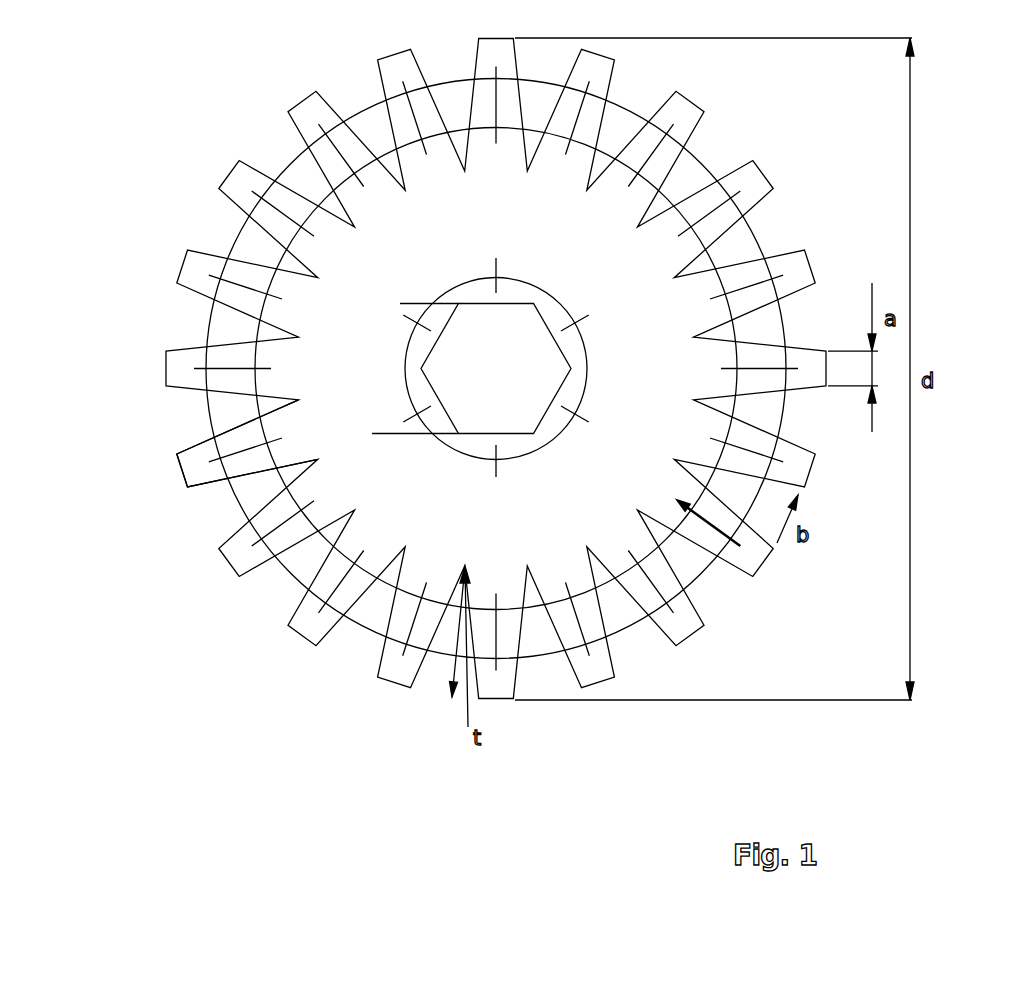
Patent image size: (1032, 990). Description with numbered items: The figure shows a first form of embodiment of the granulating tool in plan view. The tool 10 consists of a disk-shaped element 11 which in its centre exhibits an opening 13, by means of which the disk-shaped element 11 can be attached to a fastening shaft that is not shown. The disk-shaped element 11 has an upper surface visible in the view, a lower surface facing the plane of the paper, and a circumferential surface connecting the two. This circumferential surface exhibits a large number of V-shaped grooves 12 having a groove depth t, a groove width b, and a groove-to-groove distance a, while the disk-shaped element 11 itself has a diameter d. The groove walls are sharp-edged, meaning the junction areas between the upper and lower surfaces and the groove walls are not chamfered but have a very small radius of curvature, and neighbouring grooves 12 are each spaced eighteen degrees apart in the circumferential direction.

The tool 10 is at (421, 369).
The disk-shaped element 11 is at (337, 442).
The V-shaped grooves 12 is at (275, 572).
The opening 13 is at (458, 355).